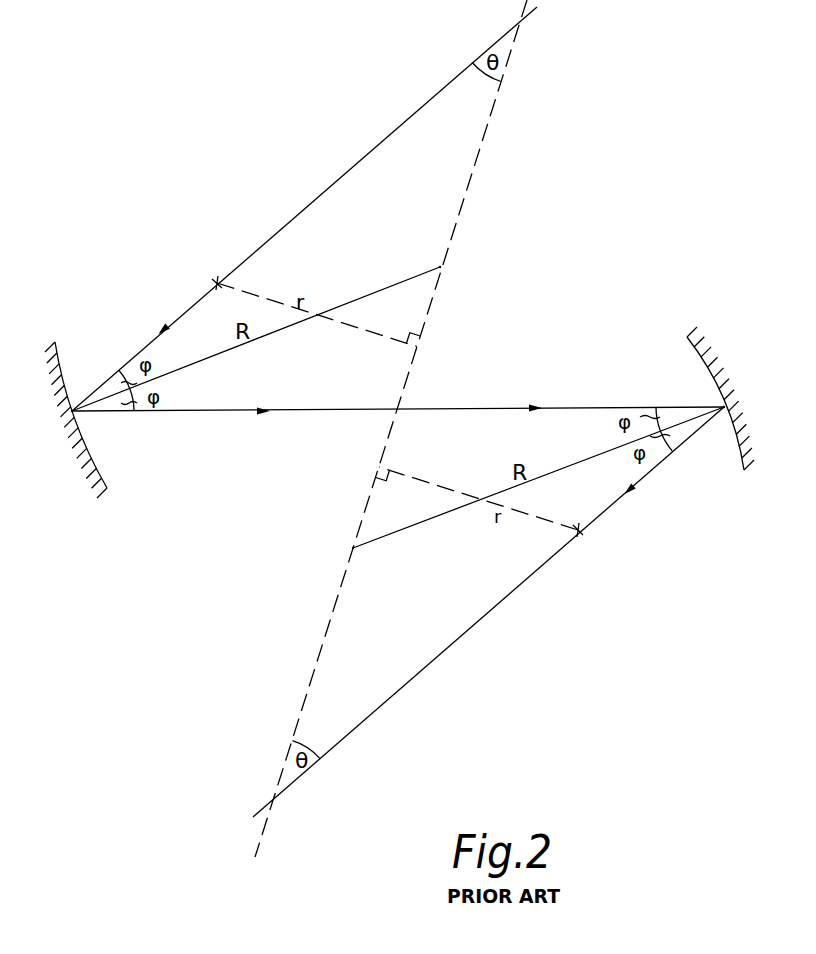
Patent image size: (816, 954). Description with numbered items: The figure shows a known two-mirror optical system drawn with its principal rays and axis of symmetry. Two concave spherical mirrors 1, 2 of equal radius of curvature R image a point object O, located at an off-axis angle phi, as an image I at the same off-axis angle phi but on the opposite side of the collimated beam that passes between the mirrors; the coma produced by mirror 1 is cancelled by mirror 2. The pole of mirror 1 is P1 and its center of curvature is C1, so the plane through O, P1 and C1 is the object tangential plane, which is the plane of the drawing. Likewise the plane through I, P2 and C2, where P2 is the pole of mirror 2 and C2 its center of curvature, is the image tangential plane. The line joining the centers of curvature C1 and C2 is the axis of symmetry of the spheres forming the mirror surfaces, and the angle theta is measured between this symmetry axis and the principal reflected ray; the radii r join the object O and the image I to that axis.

The concave spherical mirror 1 is at (93, 467).
The concave spherical mirror 2 is at (744, 470).
The pole of mirror 1 P1 is at (52, 418).
The pole of mirror 2 P2 is at (745, 405).
The point object O is at (215, 273).
The image I is at (609, 548).
The center of curvature of mirror 1 C1 is at (455, 273).
The center of curvature of mirror 2 C2 is at (338, 547).